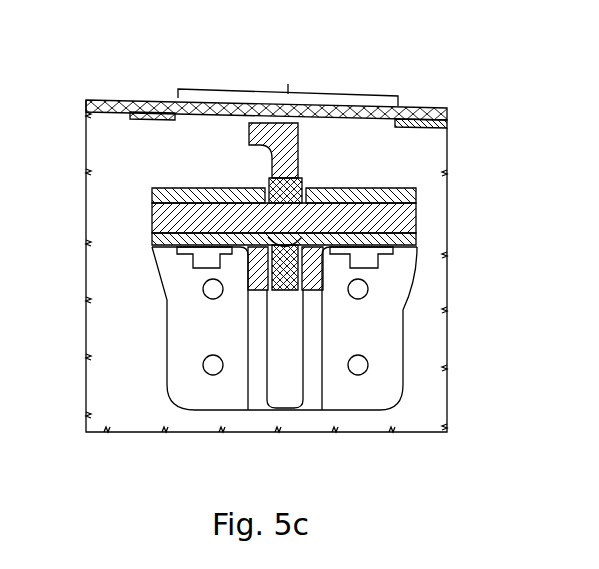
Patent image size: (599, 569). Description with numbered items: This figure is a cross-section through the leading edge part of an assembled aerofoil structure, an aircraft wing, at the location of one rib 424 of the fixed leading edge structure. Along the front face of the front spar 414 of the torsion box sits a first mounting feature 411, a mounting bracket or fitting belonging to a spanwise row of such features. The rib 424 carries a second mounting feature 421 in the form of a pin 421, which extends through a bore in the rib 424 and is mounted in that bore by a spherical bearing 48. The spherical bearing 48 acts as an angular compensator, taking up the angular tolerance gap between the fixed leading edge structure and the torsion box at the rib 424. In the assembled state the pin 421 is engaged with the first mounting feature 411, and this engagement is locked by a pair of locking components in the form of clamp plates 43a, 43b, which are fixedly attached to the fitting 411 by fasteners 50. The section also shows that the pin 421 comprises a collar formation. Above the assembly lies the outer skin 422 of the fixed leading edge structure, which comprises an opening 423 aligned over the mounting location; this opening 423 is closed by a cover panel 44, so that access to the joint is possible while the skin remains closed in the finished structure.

The first mounting feature 411 is at (105, 332).
The front spar 414 is at (378, 387).
The second mounting feature 421 is at (396, 215).
The outer skin 422 is at (108, 99).
The opening 423 is at (290, 88).
The rib 424 is at (276, 120).
The clamp plate 43a is at (150, 187).
The clamp plate 43b is at (405, 187).
The cover panel 44 is at (429, 110).
The spherical bearing 48 is at (287, 245).
The fastener 50 is at (198, 258).